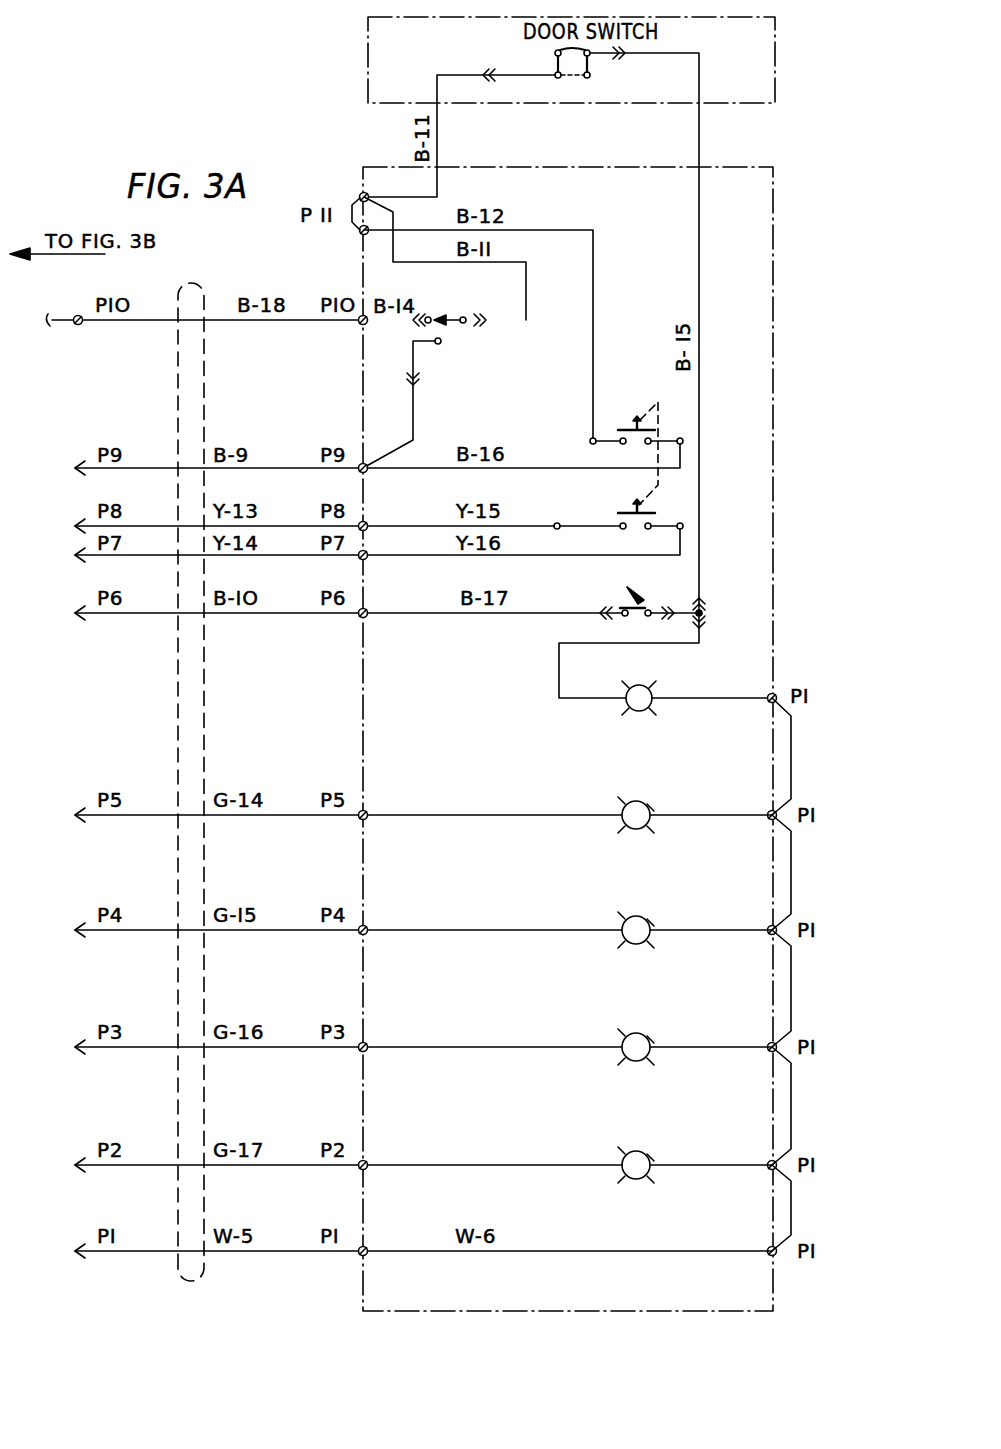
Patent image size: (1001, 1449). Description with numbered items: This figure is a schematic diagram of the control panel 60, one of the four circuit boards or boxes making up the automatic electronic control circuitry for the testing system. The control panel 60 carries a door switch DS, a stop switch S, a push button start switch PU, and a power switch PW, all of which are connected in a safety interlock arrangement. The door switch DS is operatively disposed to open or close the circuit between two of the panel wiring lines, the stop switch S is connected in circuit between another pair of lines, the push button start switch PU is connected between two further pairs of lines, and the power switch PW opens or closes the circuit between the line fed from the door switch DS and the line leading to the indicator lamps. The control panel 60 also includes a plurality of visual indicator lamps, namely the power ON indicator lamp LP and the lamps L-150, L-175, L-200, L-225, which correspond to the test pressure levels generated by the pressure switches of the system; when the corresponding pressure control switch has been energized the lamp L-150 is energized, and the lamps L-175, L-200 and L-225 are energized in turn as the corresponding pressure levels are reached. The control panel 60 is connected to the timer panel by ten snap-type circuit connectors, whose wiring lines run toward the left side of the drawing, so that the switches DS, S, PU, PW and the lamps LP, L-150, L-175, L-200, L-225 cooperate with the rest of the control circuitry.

The control panel 60 is at (668, 165).
The lamp L- 150 is at (645, 800).
The lamp L- 175 is at (645, 915).
The lamp L- 200 is at (645, 1032).
The lamp L- 225 is at (645, 1150).
The power ON indicator lamp LP is at (655, 690).
The power switch PW is at (647, 604).
The push button start switch PU is at (660, 428).
The door switch DS is at (544, 63).
The stop switch S is at (465, 327).